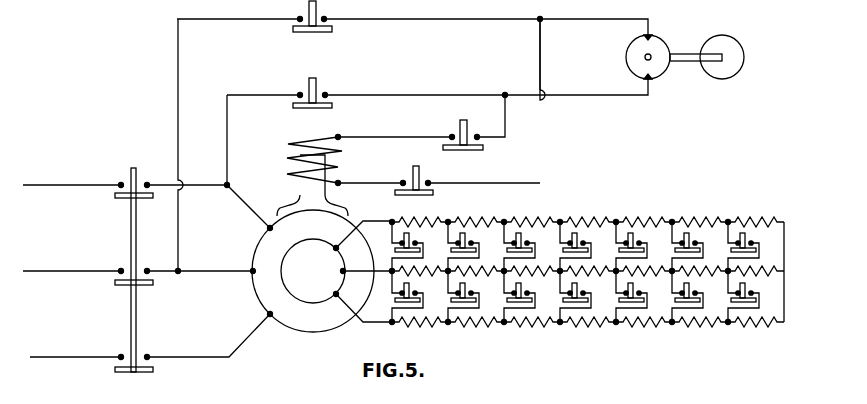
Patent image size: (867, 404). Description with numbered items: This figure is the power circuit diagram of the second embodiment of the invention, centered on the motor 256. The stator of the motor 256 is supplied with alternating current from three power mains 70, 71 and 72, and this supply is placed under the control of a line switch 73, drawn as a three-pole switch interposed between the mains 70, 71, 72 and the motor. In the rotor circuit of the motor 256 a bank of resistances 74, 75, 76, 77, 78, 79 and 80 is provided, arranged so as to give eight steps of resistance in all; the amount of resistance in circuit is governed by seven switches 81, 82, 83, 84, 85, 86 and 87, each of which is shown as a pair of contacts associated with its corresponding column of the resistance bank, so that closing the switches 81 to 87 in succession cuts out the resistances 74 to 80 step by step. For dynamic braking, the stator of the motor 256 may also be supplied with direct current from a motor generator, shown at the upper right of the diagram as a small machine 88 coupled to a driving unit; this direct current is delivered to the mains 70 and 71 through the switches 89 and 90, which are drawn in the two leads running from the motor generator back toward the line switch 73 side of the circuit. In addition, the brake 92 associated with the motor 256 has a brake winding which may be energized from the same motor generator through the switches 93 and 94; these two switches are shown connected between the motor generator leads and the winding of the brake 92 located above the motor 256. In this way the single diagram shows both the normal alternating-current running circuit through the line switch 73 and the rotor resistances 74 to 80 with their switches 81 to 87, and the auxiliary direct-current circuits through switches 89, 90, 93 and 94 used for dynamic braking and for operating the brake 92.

The power main 70 is at (53, 184).
The power main 71 is at (45, 270).
The power main 72 is at (40, 356).
The line switch 73 is at (131, 373).
The resistance 74 is at (434, 326).
The resistance 75 is at (490, 326).
The resistance 76 is at (546, 326).
The resistance 77 is at (602, 326).
The resistance 78 is at (658, 326).
The resistance 79 is at (714, 326).
The resistance 80 is at (770, 326).
The switch 81 is at (417, 292).
The switch 82 is at (473, 292).
The switch 83 is at (529, 292).
The switch 84 is at (585, 292).
The switch 85 is at (641, 292).
The switch 86 is at (697, 292).
The switch 87 is at (753, 292).
The motor 88 is at (656, 75).
The switch 89 is at (319, 16).
The switch 90 is at (322, 92).
The brake 92 is at (344, 151).
The switch 93 is at (470, 135).
The switch 94 is at (426, 178).
The motor 256 is at (255, 293).